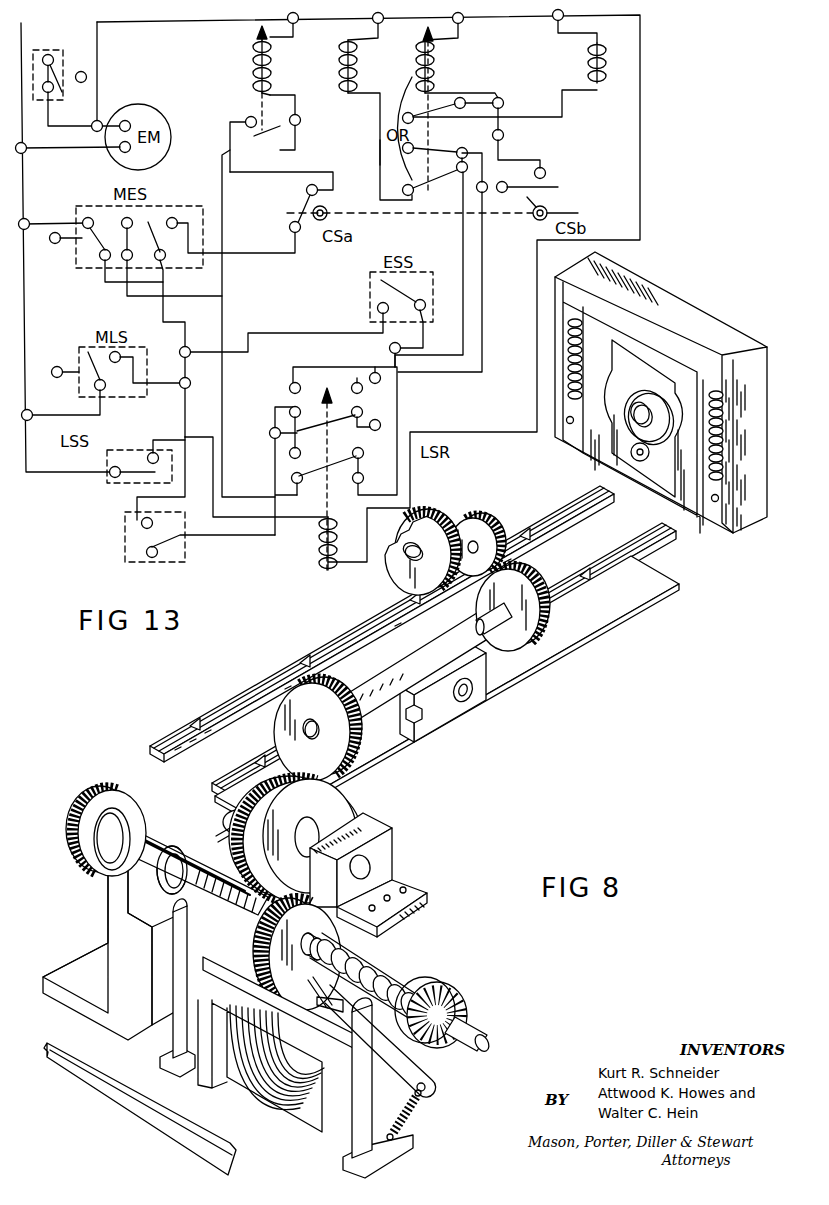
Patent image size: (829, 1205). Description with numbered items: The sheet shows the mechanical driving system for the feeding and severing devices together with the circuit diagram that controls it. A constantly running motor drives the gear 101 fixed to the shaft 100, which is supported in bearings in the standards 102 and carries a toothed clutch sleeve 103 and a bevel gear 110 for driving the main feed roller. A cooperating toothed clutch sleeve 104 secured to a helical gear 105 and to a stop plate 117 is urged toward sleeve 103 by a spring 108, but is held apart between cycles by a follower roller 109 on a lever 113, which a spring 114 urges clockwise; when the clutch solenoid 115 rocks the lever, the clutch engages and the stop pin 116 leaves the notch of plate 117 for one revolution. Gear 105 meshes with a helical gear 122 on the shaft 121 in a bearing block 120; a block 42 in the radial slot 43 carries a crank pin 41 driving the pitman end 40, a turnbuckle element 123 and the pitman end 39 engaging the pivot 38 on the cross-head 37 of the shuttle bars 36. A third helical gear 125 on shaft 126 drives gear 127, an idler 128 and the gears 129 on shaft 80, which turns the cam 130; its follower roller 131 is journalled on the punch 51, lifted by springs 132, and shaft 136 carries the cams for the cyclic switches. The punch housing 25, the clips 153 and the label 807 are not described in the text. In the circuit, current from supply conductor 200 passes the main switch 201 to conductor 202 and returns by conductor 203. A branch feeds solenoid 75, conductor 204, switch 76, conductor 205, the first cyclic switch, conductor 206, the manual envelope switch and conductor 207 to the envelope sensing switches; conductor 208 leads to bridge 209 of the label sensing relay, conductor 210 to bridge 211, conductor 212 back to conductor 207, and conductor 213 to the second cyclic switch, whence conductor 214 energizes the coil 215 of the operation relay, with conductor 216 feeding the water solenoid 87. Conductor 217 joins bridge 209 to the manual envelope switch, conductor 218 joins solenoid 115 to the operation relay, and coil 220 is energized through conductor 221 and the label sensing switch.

In FIG. 13, the supply conductor 200 is at (48, 54).
In FIG. 13, the main switch 201 is at (63, 70).
In FIG. 13, the conductor 202 is at (127, 22).
In FIG. 13, the supply conductor 203 is at (23, 180).
In FIG. 13, the conductor 204 is at (100, 281).
In FIG. 13, the conductor 205 is at (277, 174).
In FIG. 13, the conductor 206 is at (255, 255).
In FIG. 13, the conductor 207 is at (424, 337).
In FIG. 13, the conductor 208 is at (360, 330).
In FIG. 13, the bridge 209 is at (342, 477).
In FIG. 13, the conductor 210 is at (463, 231).
In FIG. 13, the bridge 211 is at (293, 405).
In FIG. 13, the conductor 212 is at (200, 537).
In FIG. 13, the conductor 213 is at (482, 233).
In FIG. 13, the conductor 214 is at (462, 93).
In FIG. 13, the actuating coil 215 is at (420, 63).
In FIG. 13, the conductor 216 is at (566, 108).
In FIG. 13, the conductor 217 is at (224, 306).
In FIG. 13, the conductor 218 is at (380, 152).
In FIG. 13, the coil 220 is at (320, 552).
In FIG. 13, the conductor 221 is at (152, 454).
In FIG. 13, the solenoid 75 is at (253, 63).
In FIG. 13, the switch 76 is at (250, 116).
In FIG. 13, the solenoid 87 is at (600, 65).
In FIG. 13, the clutch solenoid 115 is at (352, 63).
In FIG. 8, the clutch solenoid 115 is at (246, 1103).
In FIG. 13, the shaft 136 is at (402, 216).
In FIG. 8, the housing 25 is at (694, 300).
In FIG. 8, the shuttle bars 36 is at (527, 540).
In FIG. 8, the cross-head 37 is at (410, 671).
In FIG. 8, the projecting pivot 38 is at (476, 692).
In FIG. 8, the pitman end 39 is at (455, 722).
In FIG. 8, the pitman end 40 is at (234, 812).
In FIG. 8, the crank pin 41 is at (228, 838).
In FIG. 8, the block 42 is at (248, 848).
In FIG. 8, the radial slot 43 is at (262, 825).
In FIG. 8, the punch 51 is at (643, 435).
In FIG. 8, the shaft 80 is at (405, 550).
In FIG. 8, the shaft 100 is at (478, 1025).
In FIG. 8, the gear 101 is at (94, 812).
In FIG. 8, the standards 102 is at (108, 921).
In FIG. 8, the toothed clutch sleeve 103 is at (188, 868).
In FIG. 8, the toothed clutch sleeve 104 is at (227, 893).
In FIG. 8, the helical gear 105 is at (286, 918).
In FIG. 8, the spring 108 is at (378, 966).
In FIG. 8, the follower roller 109 is at (203, 960).
In FIG. 8, the bevel gear 110 is at (466, 997).
In FIG. 8, the lever 113 is at (420, 1060).
In FIG. 8, the spring 114 is at (407, 1118).
In FIG. 8, the stop pin 116 is at (323, 998).
In FIG. 8, the stop plate 117 is at (350, 947).
In FIG. 8, the bearing block 120 is at (393, 848).
In FIG. 8, the shaft 121 is at (308, 830).
In FIG. 8, the helical gear 122 is at (352, 815).
In FIG. 8, the turnbuckle element 123 is at (405, 745).
In FIG. 8, the helical gear 125 is at (318, 729).
In FIG. 8, the shaft 126 is at (505, 640).
In FIG. 8, the gear 127 is at (545, 628).
In FIG. 8, the idler 128 is at (470, 518).
In FIG. 8, the gears 129 is at (400, 572).
In FIG. 8, the cam 130 is at (648, 417).
In FIG. 8, the follower roller 131 is at (640, 460).
In FIG. 8, the springs 132 is at (580, 338).
In FIG. 8, the clip 153 is at (180, 712).
In FIG. 8, the housing 807 is at (530, 471).